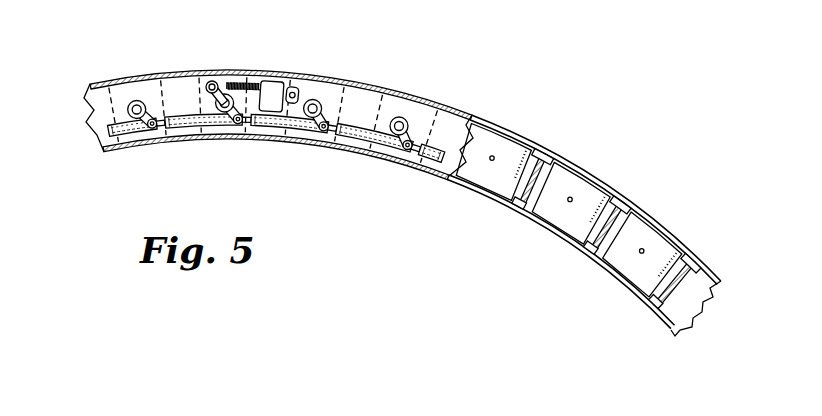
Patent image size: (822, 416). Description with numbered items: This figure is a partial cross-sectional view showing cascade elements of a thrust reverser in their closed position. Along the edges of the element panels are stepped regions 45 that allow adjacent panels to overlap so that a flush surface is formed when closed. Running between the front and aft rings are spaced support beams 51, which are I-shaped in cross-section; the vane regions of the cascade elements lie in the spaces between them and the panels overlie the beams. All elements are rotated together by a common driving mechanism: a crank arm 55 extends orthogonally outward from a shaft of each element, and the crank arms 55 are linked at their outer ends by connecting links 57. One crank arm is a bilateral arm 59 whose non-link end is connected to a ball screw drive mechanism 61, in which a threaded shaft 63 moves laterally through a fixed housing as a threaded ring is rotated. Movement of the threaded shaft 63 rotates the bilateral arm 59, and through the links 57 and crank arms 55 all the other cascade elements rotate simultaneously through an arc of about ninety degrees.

The stepped regions 45 is at (525, 140).
The support beams 51 is at (545, 165).
The crank arm 55 is at (150, 114).
The connecting links 57 is at (192, 134).
The bilateral arm 59 is at (216, 86).
The ball screw drive mechanism 61 is at (271, 90).
The threaded shaft 63 is at (243, 83).